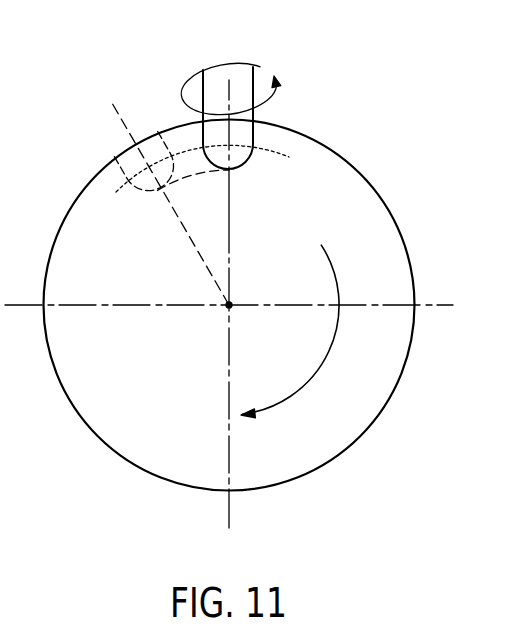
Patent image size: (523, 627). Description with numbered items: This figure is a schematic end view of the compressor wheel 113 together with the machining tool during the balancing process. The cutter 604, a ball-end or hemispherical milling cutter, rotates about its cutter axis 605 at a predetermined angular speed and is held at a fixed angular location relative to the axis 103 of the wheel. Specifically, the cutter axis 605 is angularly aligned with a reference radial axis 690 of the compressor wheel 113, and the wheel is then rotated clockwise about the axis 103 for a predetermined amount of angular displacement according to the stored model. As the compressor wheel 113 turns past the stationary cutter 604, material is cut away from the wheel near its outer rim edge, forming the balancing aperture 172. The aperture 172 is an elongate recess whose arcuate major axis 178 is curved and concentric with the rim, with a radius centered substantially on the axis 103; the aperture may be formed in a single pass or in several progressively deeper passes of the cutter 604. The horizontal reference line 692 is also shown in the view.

The compressor wheel 113 is at (387, 167).
The horizontal reference axis 692 is at (440, 305).
The reference radial axis 690 is at (231, 184).
The axis 103 is at (232, 301).
The cutter 604 is at (243, 133).
The cutter axis 605 is at (231, 79).
The balancing aperture 172 is at (190, 177).
The arcuate major axis 178 is at (118, 188).